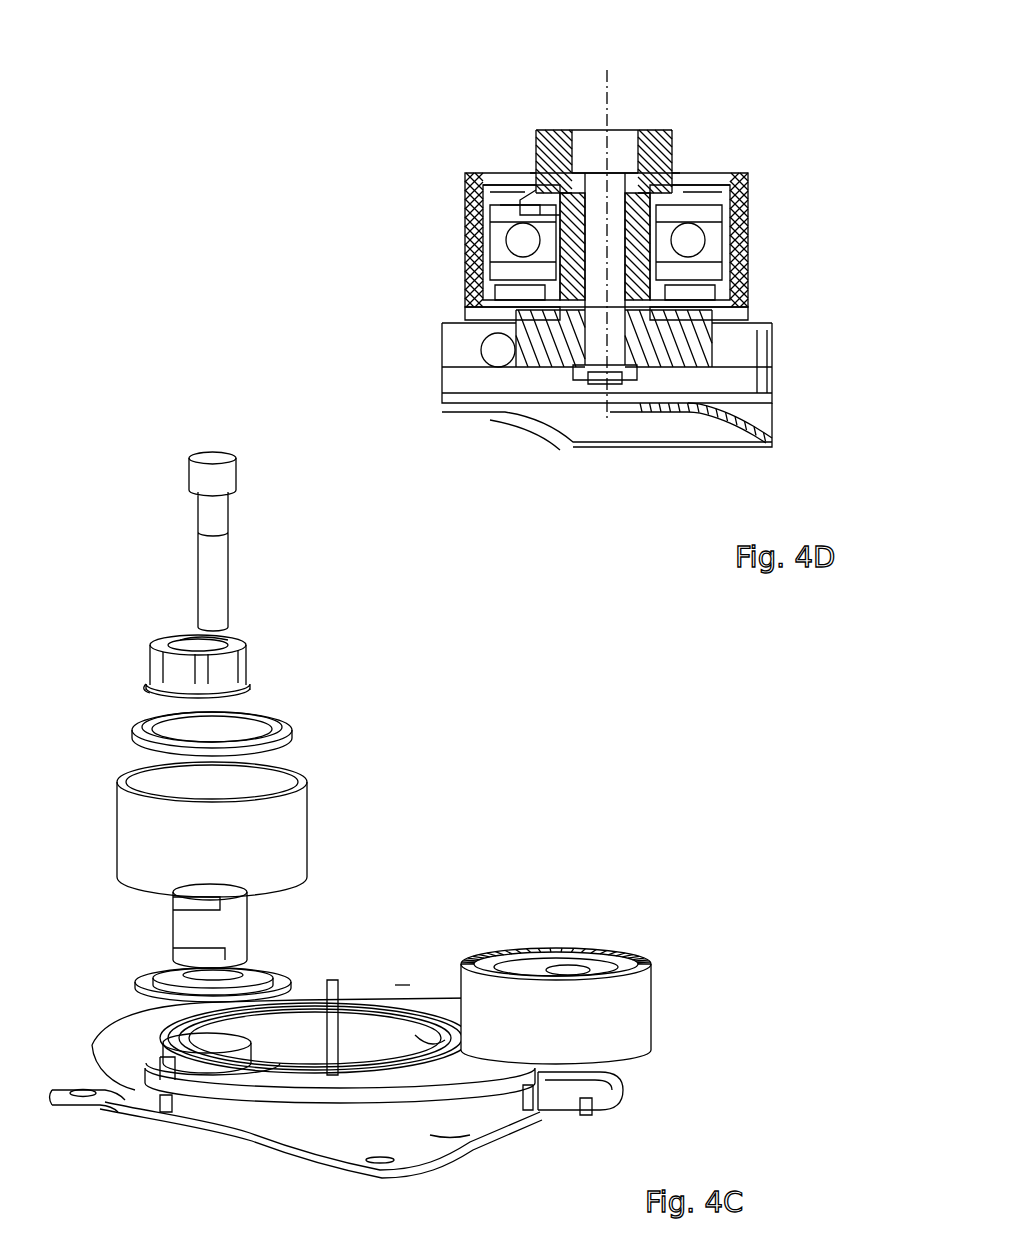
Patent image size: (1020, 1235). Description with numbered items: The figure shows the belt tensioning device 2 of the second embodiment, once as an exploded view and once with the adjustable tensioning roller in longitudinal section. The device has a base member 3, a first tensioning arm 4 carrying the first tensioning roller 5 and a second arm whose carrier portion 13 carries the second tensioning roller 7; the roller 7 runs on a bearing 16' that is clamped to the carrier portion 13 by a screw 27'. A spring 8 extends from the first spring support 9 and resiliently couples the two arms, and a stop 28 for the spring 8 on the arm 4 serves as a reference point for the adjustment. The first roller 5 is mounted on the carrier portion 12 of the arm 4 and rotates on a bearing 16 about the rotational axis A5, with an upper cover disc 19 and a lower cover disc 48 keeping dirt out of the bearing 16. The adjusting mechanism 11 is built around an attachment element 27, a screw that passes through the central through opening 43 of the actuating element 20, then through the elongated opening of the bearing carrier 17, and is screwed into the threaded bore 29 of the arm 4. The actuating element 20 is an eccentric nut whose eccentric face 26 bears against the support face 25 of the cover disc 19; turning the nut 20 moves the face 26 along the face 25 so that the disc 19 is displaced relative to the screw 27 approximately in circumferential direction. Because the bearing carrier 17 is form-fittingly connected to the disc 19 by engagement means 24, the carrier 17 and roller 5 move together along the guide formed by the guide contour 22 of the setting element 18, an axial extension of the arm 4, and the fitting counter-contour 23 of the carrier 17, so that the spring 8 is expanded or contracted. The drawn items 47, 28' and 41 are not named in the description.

In FIG. 4D, the rotational axis A5 is at (607, 82).
In FIG. 4D, the adjusting mechanism 11 is at (512, 114).
In FIG. 4D, the attachment element 27 is at (604, 205).
In FIG. 4C, the attachment element 27 is at (228, 508).
In FIG. 4D, the actuating element 20 is at (674, 128).
In FIG. 4C, the actuating element 20 is at (248, 640).
In FIG. 4D, the support face 25 is at (546, 170).
In FIG. 4C, the support face 25 is at (140, 735).
In FIG. 4D, the actuating structure 26 is at (532, 186).
In FIG. 4C, the actuating structure 26 is at (150, 688).
In FIG. 4D, the supporting element 19 is at (700, 180).
In FIG. 4C, the supporting element 19 is at (290, 718).
In FIG. 4D, the first tensioning roller 5 is at (752, 190).
In FIG. 4C, the first tensioning roller 5 is at (312, 801).
In FIG. 4D, the central through opening 43 is at (572, 200).
In FIG. 4C, the central through opening 43 is at (228, 642).
In FIG. 4D, the bearing 16 is at (738, 242).
In FIG. 4D, the bearing carrier 17 is at (700, 262).
In FIG. 4C, the bearing carrier 17 is at (252, 915).
In FIG. 4D, the guide contour 22 is at (496, 285).
In FIG. 4C, the guide contour 22 is at (240, 1040).
In FIG. 4D, the counter-contour 23 is at (712, 290).
In FIG. 4C, the counter-contour 23 is at (176, 955).
In FIG. 4D, the setting element 18 is at (556, 302).
In FIG. 4C, the setting element 18 is at (172, 1043).
In FIG. 4D, the carrier portion 12 is at (553, 350).
In FIG. 4C, the carrier portion 12 is at (245, 1088).
In FIG. 4D, the spring 8 is at (492, 350).
In FIG. 4C, the spring 8 is at (400, 984).
In FIG. 4D, the first tensioning arm 4 is at (750, 337).
In FIG. 4C, the first tensioning arm 4 is at (300, 1087).
In FIG. 4D, the threaded bore 29 is at (618, 352).
In FIG. 4D, the base member 3 is at (733, 420).
In FIG. 4C, the base member 3 is at (450, 1140).
In FIG. 4C, the belt tensioning device 2 is at (316, 448).
In FIG. 4C, the engagement means 24 is at (178, 905).
In FIG. 4C, the cover disc 48 is at (150, 985).
In FIG. 4C, the mounting lug 47 is at (72, 1105).
In FIG. 4C, the carrier portion 13 is at (503, 1093).
In FIG. 4C, the stop 28 is at (213, 1107).
In FIG. 4C, the first spring support 9 is at (166, 1114).
In FIG. 4C, the boss 28' is at (517, 1136).
In FIG. 4C, the spring 41 is at (431, 1043).
In FIG. 4C, the second tensioning roller 7 is at (653, 1003).
In FIG. 4C, the bearing 16' is at (575, 930).
In FIG. 4C, the screw 27' is at (576, 923).